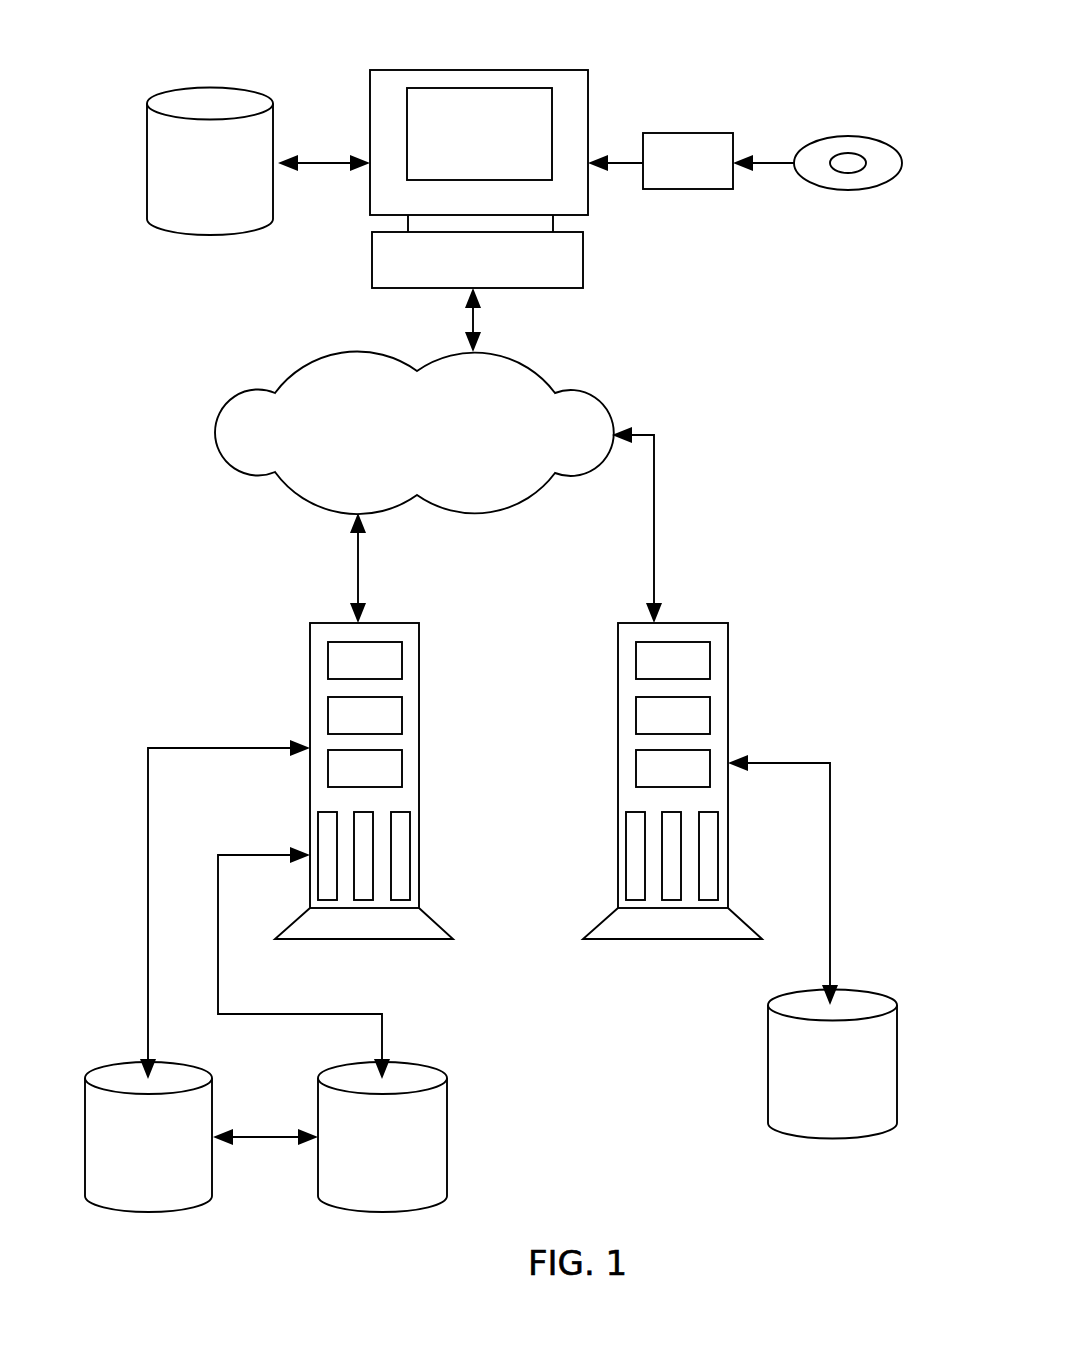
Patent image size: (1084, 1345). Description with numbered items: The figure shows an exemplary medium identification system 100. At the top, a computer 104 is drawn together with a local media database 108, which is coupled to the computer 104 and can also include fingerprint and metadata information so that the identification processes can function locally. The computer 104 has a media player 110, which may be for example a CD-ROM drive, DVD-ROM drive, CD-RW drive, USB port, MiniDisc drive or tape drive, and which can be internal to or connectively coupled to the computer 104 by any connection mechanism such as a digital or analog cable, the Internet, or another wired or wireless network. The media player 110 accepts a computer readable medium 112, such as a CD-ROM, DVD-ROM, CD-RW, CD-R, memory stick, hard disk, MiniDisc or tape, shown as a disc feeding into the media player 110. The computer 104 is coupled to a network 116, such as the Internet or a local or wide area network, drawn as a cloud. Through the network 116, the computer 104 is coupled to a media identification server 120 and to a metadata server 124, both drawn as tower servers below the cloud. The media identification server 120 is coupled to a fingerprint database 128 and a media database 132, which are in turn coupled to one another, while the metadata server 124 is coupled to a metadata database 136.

The medium identification system 100 is at (667, 1209).
The computer 104 is at (497, 70).
The local media database 108 is at (230, 87).
The media player 110 is at (668, 133).
The computer readable medium 112 is at (842, 136).
The network 116 is at (580, 393).
The media identification server 120 is at (400, 623).
The metadata server 124 is at (710, 623).
The fingerprint database 128 is at (213, 1097).
The media database 132 is at (432, 1068).
The metadata database 136 is at (768, 1085).